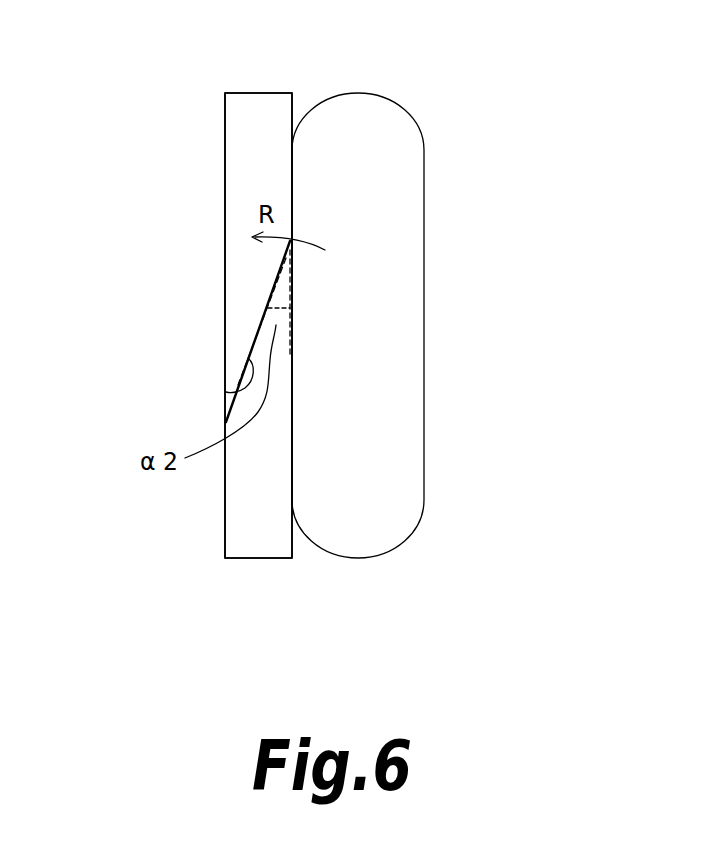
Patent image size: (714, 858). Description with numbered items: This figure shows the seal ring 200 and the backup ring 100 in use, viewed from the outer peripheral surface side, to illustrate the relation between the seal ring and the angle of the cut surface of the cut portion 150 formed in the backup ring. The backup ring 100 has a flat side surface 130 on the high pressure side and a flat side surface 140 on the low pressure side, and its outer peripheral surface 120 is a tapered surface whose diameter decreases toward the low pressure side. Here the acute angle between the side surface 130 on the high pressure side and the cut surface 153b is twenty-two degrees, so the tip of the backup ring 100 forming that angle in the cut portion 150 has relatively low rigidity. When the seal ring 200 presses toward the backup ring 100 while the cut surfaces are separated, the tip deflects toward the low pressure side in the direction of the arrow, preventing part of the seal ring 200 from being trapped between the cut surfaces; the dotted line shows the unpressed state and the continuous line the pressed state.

The backup ring 100 is at (197, 138).
The outer peripheral surface 120 is at (267, 533).
The side surface on the high pressure side 130 is at (292, 112).
The side surface on the low pressure side 140 is at (225, 494).
The cut portion 150 is at (245, 318).
The cut surface 153b is at (225, 391).
The seal ring 200 is at (402, 383).